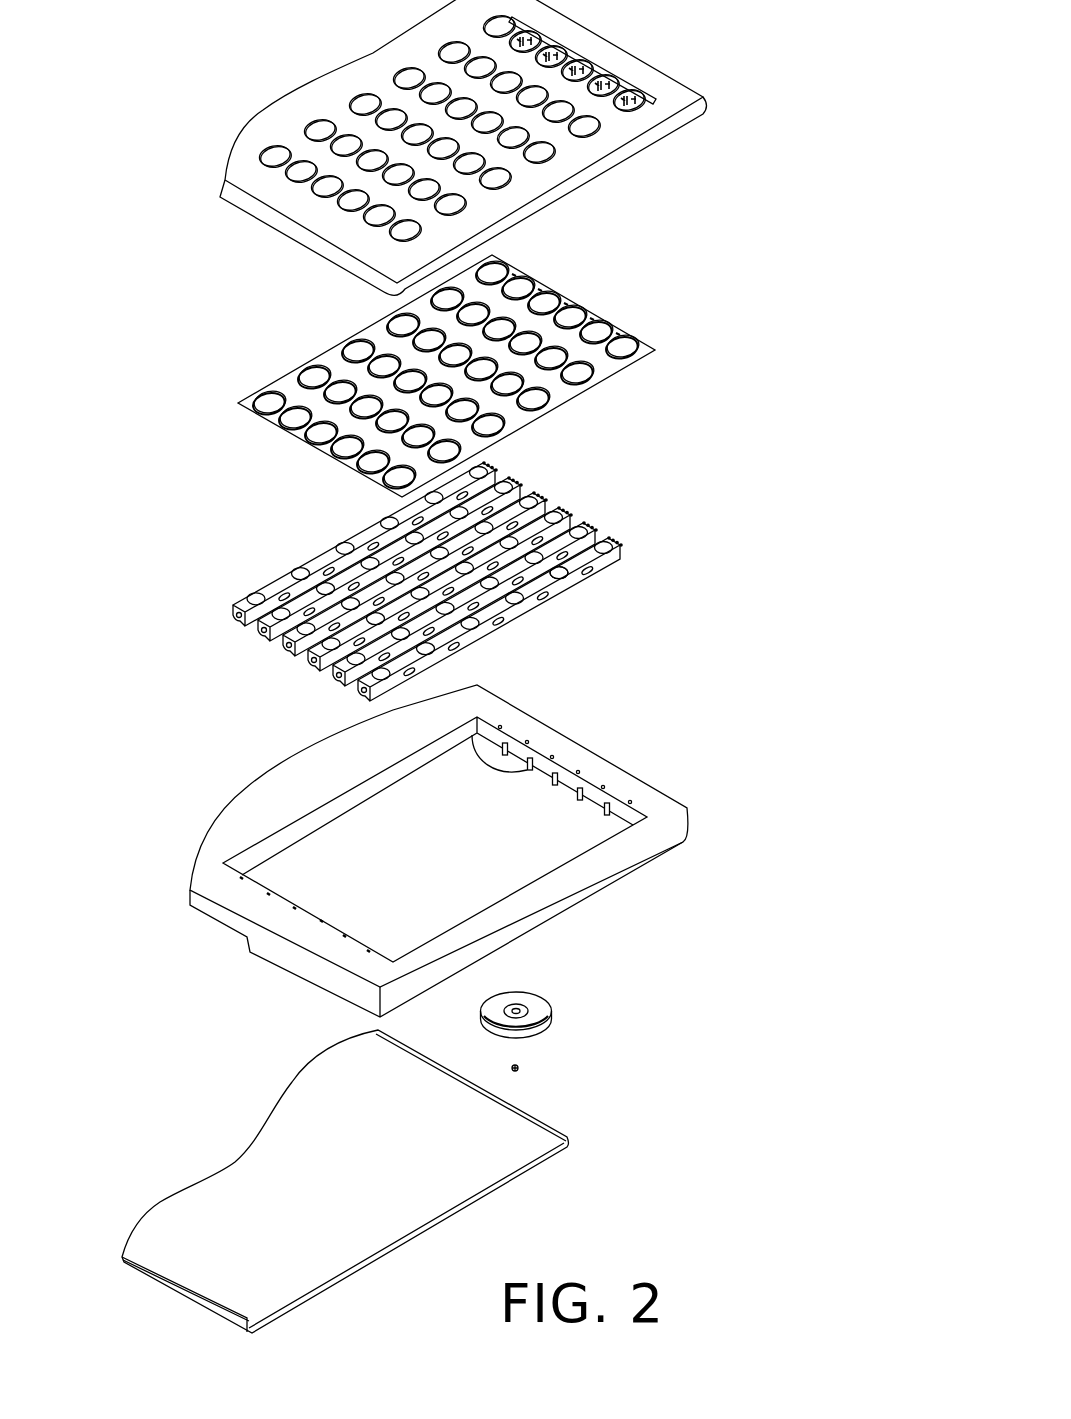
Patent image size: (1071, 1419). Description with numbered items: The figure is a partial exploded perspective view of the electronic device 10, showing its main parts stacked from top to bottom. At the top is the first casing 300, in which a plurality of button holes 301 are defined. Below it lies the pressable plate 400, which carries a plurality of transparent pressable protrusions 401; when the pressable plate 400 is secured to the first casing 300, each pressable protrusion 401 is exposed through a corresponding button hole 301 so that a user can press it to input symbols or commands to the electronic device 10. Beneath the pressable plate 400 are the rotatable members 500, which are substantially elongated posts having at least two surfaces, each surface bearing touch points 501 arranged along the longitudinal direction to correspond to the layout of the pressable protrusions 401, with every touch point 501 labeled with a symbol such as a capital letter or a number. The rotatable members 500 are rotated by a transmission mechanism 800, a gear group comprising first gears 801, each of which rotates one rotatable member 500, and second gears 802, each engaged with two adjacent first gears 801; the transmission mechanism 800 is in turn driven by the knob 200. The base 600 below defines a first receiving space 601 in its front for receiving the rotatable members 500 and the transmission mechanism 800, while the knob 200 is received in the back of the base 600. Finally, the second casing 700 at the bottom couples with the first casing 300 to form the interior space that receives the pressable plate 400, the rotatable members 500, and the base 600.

The electronic device 10 is at (243, 57).
The first casing 300 is at (471, 147).
The button holes 301 is at (592, 130).
The pressable plate 400 is at (474, 376).
The pressable protrusions 401 is at (620, 347).
The rotatable members 500 is at (472, 563).
The touch points 501 is at (562, 572).
The base 600 is at (480, 851).
The first receiving space 601 is at (533, 853).
The knob 200 is at (540, 1015).
The second casing 700 is at (507, 1153).
The transmission mechanism 800 is at (596, 486).
The first gears 801 is at (515, 480).
The second gears 802 is at (530, 493).